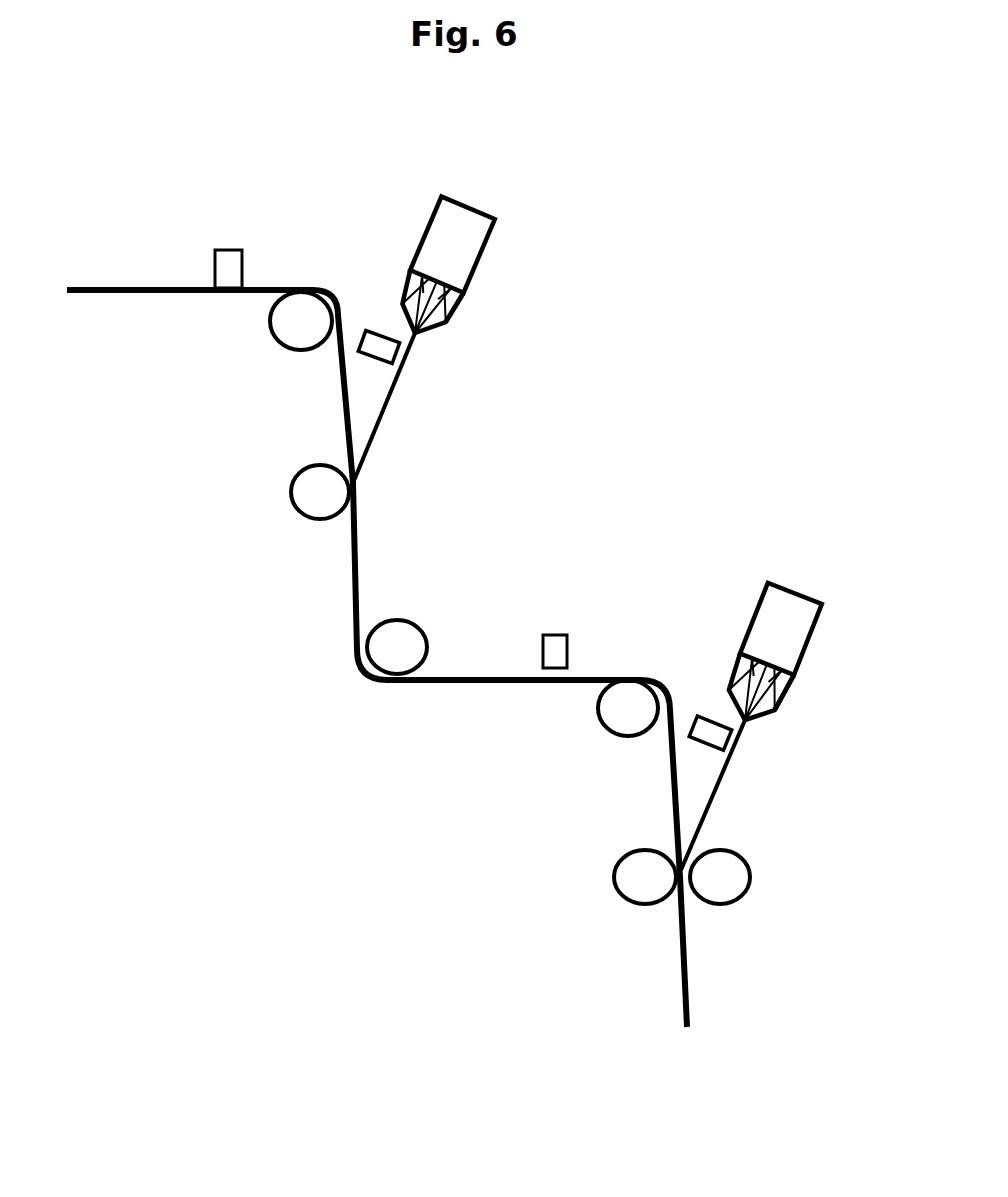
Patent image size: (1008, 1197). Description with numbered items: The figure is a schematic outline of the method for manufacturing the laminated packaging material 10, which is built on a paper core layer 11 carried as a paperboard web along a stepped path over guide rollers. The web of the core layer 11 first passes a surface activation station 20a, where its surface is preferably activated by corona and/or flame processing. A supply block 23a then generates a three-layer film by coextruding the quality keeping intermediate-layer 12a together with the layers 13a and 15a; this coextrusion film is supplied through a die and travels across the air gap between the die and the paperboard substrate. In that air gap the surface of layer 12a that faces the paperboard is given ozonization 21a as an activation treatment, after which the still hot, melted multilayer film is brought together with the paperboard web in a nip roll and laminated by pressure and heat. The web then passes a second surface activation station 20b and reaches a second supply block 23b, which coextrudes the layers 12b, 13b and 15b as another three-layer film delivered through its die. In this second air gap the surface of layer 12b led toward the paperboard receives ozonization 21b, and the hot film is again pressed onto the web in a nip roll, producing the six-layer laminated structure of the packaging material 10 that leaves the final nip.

The laminated packaging material 10 is at (690, 952).
The paper core layer 11 is at (150, 288).
The quality keeping intermediate-layer 12a is at (400, 307).
The second quality keeping intermediate-layer 12b is at (727, 686).
The first coextruded layer 13a is at (440, 331).
The second coextruded layer 13b is at (763, 718).
The first coextruded outer layer 15a is at (466, 306).
The second coextruded outer layer 15b is at (793, 697).
The surface activation station 20a is at (215, 248).
The second surface activation station 20b is at (541, 634).
The ozonization 21a is at (364, 365).
The second ozonization 21b is at (692, 745).
The supply block 23a is at (441, 200).
The second supply block 23b is at (765, 590).